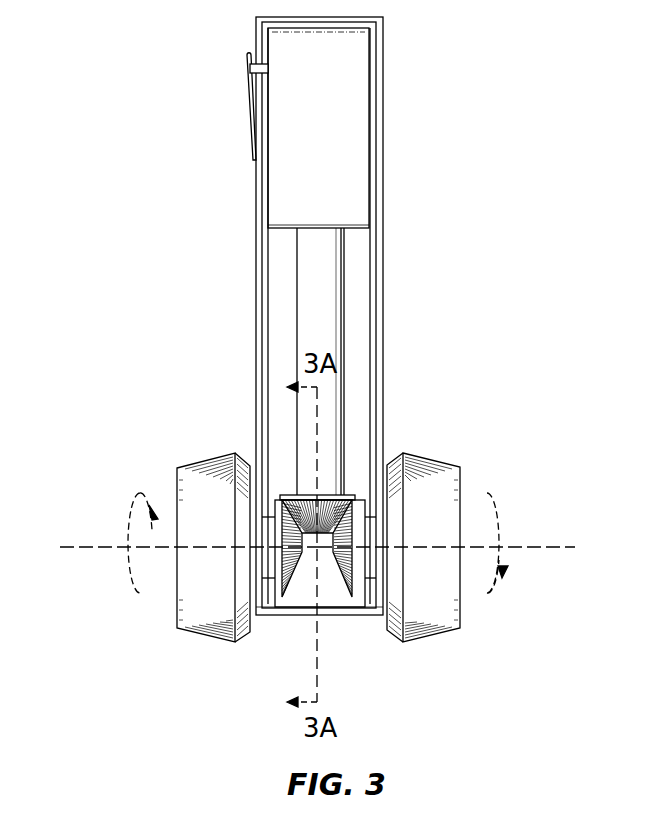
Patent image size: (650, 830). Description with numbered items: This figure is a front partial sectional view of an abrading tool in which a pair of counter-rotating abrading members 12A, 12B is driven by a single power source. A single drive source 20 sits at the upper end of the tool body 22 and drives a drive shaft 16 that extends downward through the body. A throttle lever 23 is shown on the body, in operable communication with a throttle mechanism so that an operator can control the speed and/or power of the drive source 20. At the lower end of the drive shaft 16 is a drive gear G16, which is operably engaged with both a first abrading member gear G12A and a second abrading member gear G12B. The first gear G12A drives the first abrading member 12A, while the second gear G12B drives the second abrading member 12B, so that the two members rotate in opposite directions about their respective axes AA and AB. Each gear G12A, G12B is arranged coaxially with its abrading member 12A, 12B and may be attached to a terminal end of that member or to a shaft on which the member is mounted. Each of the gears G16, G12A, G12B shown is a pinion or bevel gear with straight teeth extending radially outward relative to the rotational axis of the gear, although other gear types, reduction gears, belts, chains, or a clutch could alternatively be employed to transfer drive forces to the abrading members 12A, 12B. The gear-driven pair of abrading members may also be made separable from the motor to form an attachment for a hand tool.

The drive source 20 is at (357, 108).
The drive shaft 16 is at (344, 307).
The tool body 22 is at (383, 357).
The throttle lever 23 is at (245, 88).
The first abrading member 12A is at (193, 462).
The second abrading member 12B is at (437, 462).
The drive gear G16 is at (288, 493).
The first abrading member gear G12A is at (277, 607).
The second abrading member gear G12B is at (362, 607).
The rotation axis of first wheel AA is at (65, 527).
The rotation axis of second wheel AB is at (520, 547).